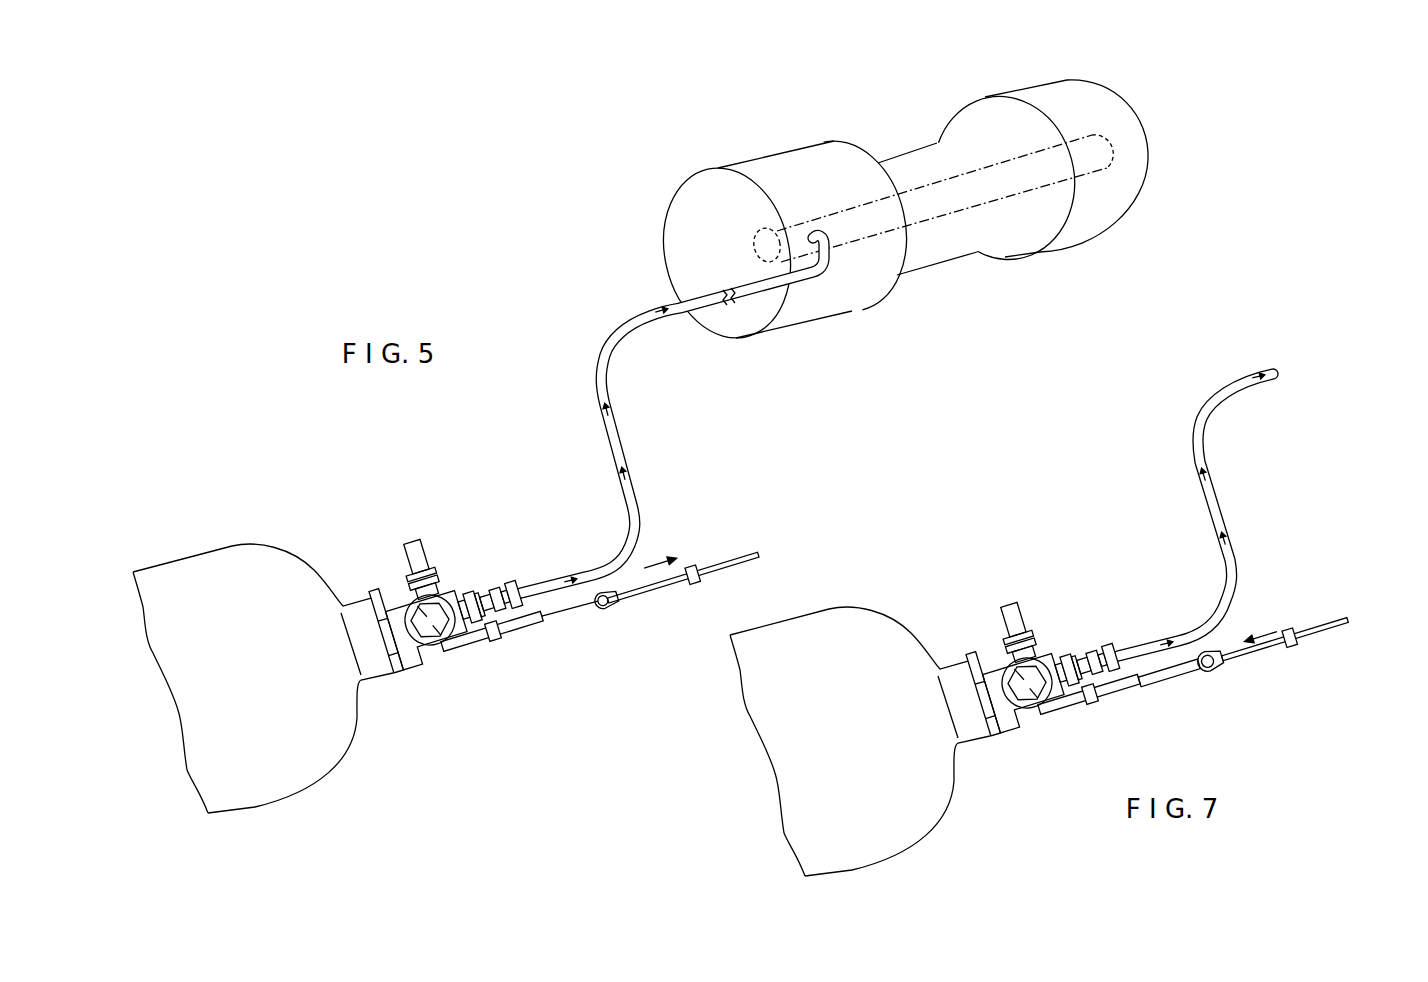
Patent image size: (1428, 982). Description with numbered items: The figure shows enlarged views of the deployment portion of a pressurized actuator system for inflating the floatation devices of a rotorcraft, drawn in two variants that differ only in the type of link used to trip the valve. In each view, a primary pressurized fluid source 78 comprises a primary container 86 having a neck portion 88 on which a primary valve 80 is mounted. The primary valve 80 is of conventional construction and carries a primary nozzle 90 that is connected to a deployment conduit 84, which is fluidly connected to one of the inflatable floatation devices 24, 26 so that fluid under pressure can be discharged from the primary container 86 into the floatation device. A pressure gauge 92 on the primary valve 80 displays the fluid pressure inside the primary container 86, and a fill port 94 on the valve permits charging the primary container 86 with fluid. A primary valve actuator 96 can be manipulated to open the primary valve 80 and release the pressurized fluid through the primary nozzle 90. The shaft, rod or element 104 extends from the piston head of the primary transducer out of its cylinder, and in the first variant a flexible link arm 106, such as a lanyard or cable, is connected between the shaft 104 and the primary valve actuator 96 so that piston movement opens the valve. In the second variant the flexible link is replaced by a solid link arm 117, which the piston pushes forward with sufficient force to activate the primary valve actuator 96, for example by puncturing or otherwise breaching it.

In FIG. 5, the inflatable floatation device 24 is at (757, 160).
In FIG. 5, the inflatable floatation device 26 is at (930, 200).
In FIG. 5, the primary pressurized fluid source 78 is at (226, 543).
In FIG. 7, the primary pressurized fluid source 78 is at (822, 606).
In FIG. 5, the primary valve 80 is at (458, 591).
In FIG. 7, the primary valve 80 is at (1055, 654).
In FIG. 5, the deployment conduit 84 is at (605, 352).
In FIG. 7, the deployment conduit 84 is at (1203, 418).
In FIG. 5, the primary container 86 is at (290, 770).
In FIG. 7, the primary container 86 is at (887, 833).
In FIG. 5, the neck portion 88 is at (350, 602).
In FIG. 7, the neck portion 88 is at (947, 665).
In FIG. 5, the primary nozzle 90 is at (480, 590).
In FIG. 7, the primary nozzle 90 is at (1077, 653).
In FIG. 5, the pressure gauge 92 is at (443, 653).
In FIG. 7, the pressure gauge 92 is at (1040, 716).
In FIG. 5, the fill port 94 is at (425, 541).
In FIG. 7, the fill port 94 is at (1022, 604).
In FIG. 5, the primary valve actuator 96 is at (505, 632).
In FIG. 7, the primary valve actuator 96 is at (1103, 695).
In FIG. 5, the shaft, rod or element 104 is at (743, 553).
In FIG. 7, the shaft, rod or element 104 is at (1348, 620).
In FIG. 5, the link arm 106 is at (577, 613).
In FIG. 7, the solid link arm 117 is at (1177, 676).